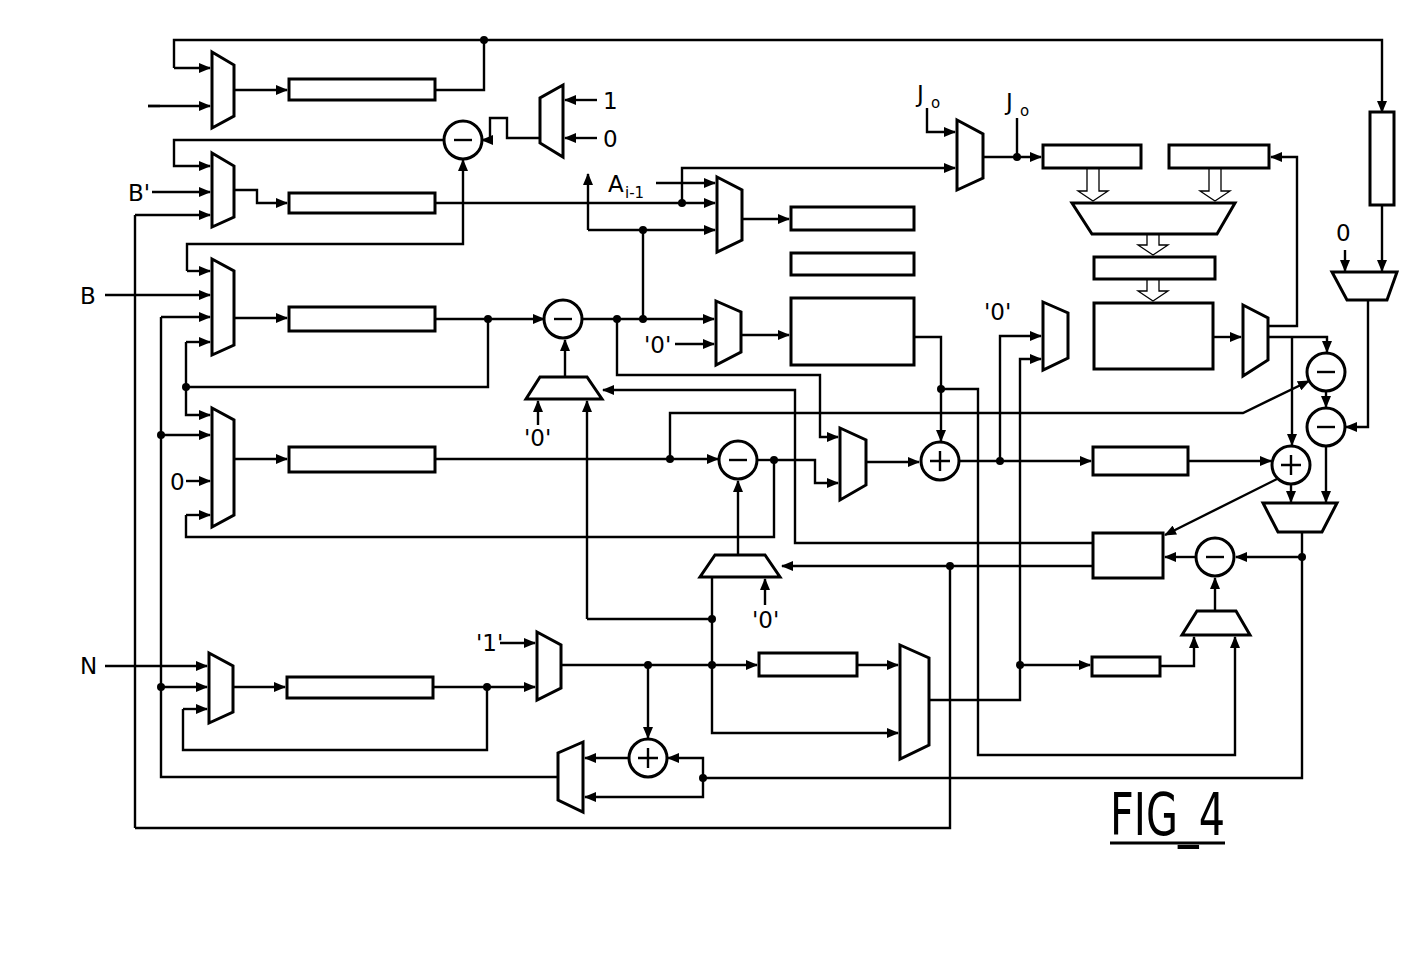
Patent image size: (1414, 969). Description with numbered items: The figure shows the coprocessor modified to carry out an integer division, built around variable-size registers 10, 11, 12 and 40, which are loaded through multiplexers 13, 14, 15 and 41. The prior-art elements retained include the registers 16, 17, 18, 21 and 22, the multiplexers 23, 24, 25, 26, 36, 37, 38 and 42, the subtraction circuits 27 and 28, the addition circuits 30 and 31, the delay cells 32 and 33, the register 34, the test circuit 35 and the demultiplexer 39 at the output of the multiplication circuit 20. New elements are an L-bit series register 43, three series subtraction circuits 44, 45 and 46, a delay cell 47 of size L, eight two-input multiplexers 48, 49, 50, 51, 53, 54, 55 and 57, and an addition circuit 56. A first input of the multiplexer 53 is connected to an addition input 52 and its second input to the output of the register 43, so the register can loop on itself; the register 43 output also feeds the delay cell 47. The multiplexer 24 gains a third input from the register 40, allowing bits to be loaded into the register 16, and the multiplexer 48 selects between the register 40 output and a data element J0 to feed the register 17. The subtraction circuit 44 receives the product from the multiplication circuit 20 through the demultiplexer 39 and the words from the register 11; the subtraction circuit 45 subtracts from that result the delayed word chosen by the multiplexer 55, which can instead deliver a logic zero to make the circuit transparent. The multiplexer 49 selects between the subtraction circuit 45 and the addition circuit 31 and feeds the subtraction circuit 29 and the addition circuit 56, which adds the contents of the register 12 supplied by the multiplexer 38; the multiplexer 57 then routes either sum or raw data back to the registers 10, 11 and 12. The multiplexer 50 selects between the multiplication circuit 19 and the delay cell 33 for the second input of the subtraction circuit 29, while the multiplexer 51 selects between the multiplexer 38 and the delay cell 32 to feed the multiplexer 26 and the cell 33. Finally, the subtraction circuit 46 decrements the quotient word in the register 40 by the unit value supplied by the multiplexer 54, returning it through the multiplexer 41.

The register 10 is at (350, 332).
The register 11 is at (357, 472).
The register 12 is at (355, 675).
The multiplexer 13 is at (236, 290).
The multiplexer 14 is at (236, 440).
The multiplexer 15 is at (220, 655).
The register 16 is at (865, 207).
The register 17 is at (1098, 143).
The register 18 is at (1222, 143).
The multiplication circuit 19 is at (915, 311).
The multiplication circuit 20 is at (1140, 370).
The register 21 is at (915, 266).
The register 22 is at (1216, 268).
The multiplexer 23 is at (1230, 214).
The multiplexer 24 is at (727, 254).
The multiplexer 25 is at (732, 300).
The multiplexer 26 is at (1053, 300).
The subtraction circuit 27 is at (560, 300).
The subtraction circuit 28 is at (722, 478).
The subtraction circuit 29 is at (1219, 536).
The addition circuit 30 is at (940, 482).
The addition circuit 31 is at (1273, 452).
The delay cell 32 is at (815, 677).
The delay cell 33 is at (1120, 678).
The register 34 is at (1137, 477).
The test circuit 35 is at (1117, 580).
The multiplexer 36 is at (524, 394).
The multiplexer 37 is at (698, 563).
The multiplexer 38 is at (545, 630).
The demultiplexer 39 is at (1250, 378).
The register 40 is at (375, 193).
The multiplexer 41 is at (236, 220).
The multiplexer 42 is at (852, 502).
The register 43 is at (380, 79).
The subtraction circuit 44 is at (1337, 351).
The subtraction circuit 45 is at (1343, 440).
The subtraction circuit 46 is at (447, 130).
The delay cell 47 is at (1370, 147).
The multiplexer 48 is at (970, 192).
The multiplexer 49 is at (1330, 528).
The multiplexer 50 is at (1188, 624).
The multiplexer 51 is at (918, 644).
The addition input 52 is at (152, 106).
The multiplexer 53 is at (236, 112).
The multiplexer 54 is at (545, 150).
The multiplexer 55 is at (1394, 286).
The addition circuit 56 is at (660, 740).
The multiplexer 57 is at (566, 745).